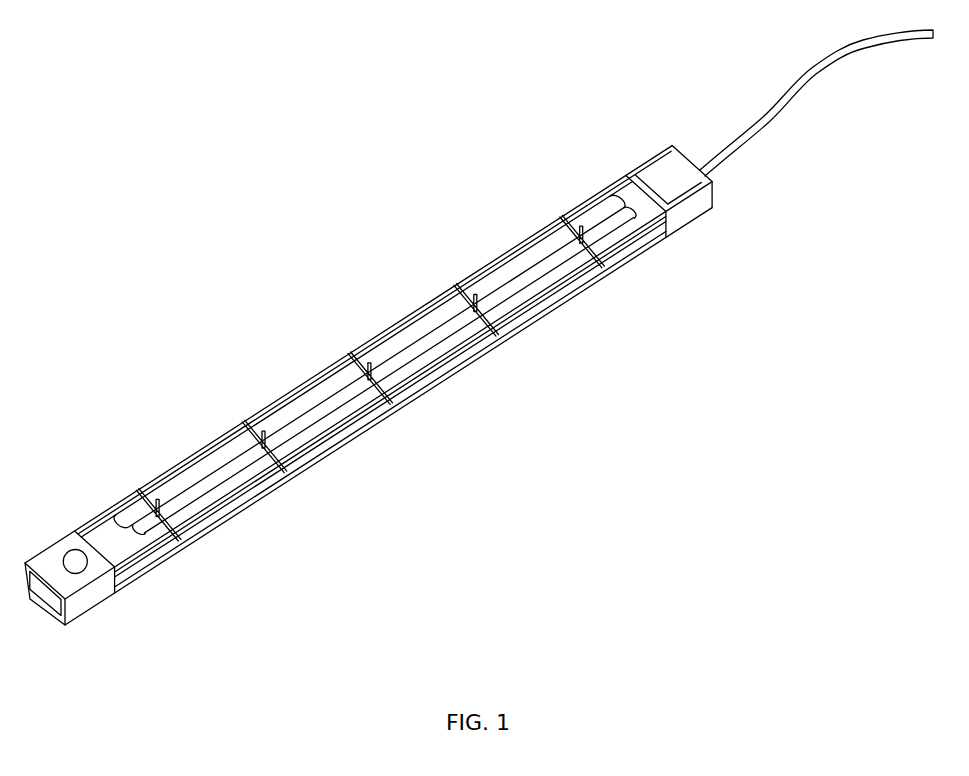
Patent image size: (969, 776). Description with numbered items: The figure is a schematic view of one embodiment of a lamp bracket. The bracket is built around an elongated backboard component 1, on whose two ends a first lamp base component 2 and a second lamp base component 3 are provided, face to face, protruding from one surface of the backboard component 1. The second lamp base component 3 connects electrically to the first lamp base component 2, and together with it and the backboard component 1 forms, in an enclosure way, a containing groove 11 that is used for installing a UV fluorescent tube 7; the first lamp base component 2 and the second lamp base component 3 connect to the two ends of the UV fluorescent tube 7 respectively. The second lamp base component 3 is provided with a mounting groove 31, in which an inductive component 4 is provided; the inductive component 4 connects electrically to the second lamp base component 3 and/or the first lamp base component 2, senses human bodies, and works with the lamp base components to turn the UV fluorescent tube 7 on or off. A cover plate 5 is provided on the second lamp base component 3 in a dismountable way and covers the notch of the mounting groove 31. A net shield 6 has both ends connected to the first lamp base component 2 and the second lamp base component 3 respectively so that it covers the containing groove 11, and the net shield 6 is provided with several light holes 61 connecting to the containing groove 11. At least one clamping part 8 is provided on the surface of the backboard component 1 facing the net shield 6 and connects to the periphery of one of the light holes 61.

The backboard component 1 is at (408, 396).
The containing groove 11 is at (530, 323).
The first lamp base component 2 is at (713, 200).
The second lamp base component 3 is at (45, 600).
The mounting groove 31 is at (58, 627).
The inductive component 4 is at (72, 550).
The cover plate 5 is at (68, 551).
The net shield 6 is at (243, 417).
The light holes 61 is at (405, 321).
The UV fluorescent tube 7 is at (190, 471).
The clamping part 8 is at (347, 357).